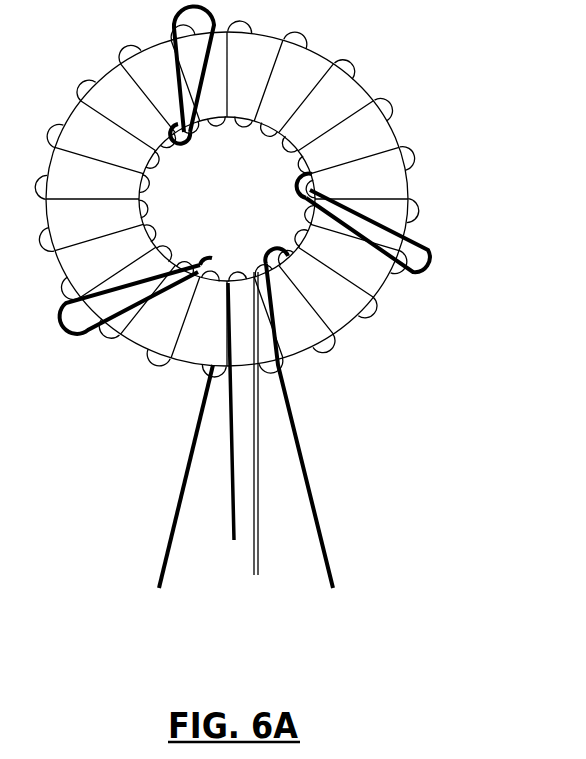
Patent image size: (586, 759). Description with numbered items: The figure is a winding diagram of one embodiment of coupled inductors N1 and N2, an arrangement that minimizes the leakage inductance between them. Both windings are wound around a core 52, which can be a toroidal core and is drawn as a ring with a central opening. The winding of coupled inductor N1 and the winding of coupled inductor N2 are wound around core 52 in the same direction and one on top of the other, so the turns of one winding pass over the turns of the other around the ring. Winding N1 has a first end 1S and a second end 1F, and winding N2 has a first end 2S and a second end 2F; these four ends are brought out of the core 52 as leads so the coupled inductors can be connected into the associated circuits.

The core 52 is at (392, 186).
The coupled inductor winding N1 is at (227, 303).
The coupled inductor winding N2 is at (248, 327).
The second end of winding N1 1F is at (212, 428).
The first end of winding N1 1S is at (264, 429).
The second end of winding N2 2F is at (170, 507).
The first end of winding N2 2S is at (311, 446).